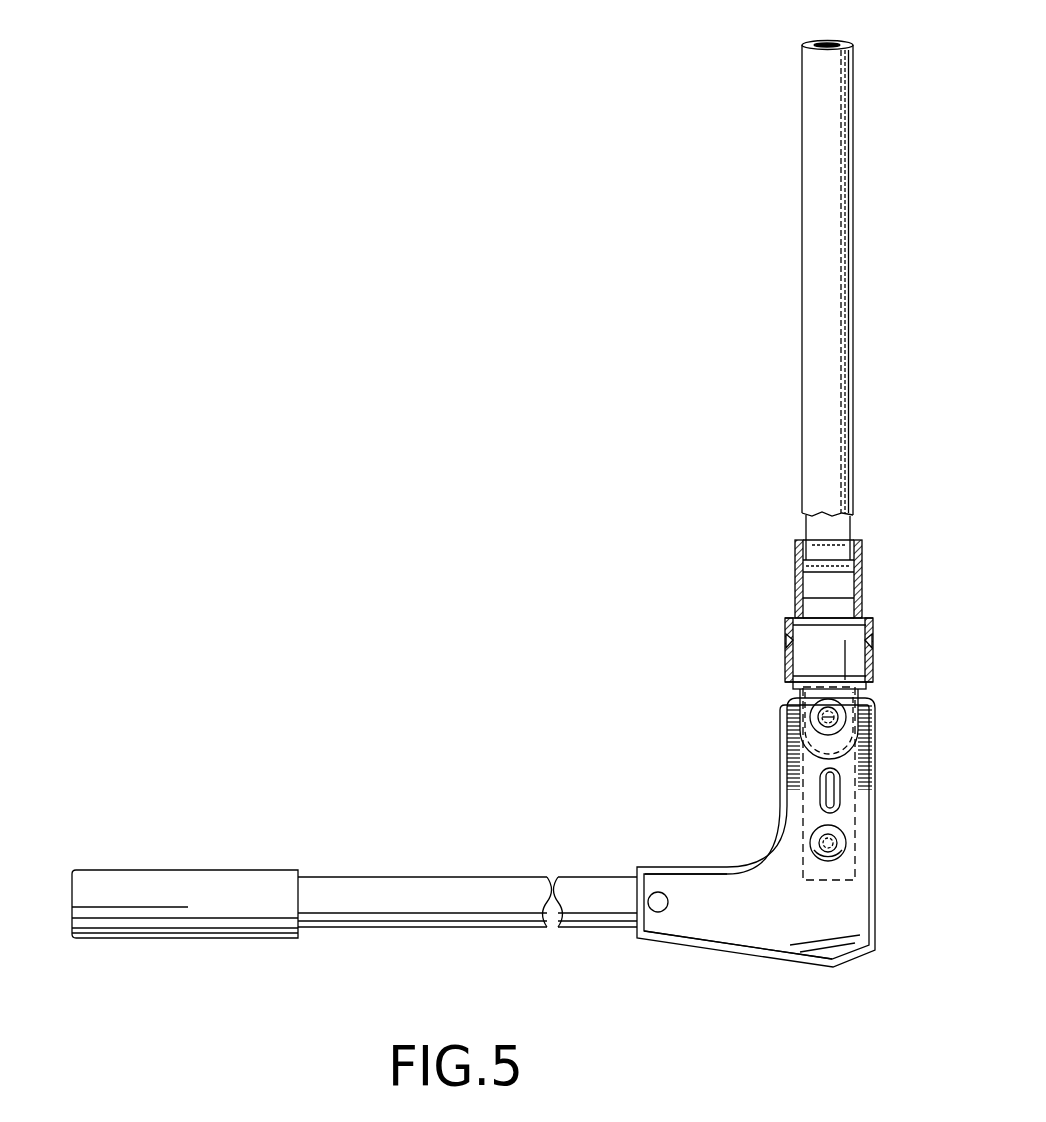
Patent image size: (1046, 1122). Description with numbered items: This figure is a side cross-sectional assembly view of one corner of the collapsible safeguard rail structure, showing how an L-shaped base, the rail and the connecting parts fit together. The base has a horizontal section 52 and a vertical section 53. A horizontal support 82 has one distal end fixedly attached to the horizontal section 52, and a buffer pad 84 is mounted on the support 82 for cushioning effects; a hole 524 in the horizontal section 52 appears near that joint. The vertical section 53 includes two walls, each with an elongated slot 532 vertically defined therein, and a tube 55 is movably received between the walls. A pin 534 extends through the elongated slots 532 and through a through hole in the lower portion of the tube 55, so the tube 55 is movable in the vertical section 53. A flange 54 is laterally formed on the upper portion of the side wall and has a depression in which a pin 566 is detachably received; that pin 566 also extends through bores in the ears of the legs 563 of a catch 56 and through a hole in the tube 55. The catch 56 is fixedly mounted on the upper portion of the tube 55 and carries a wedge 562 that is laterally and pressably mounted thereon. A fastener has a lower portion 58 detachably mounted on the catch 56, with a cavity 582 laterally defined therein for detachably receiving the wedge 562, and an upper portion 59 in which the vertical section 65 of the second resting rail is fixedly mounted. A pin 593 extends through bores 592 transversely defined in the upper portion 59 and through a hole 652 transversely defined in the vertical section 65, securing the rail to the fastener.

The vertical section 65 is at (843, 400).
The hole 652 is at (858, 562).
The upper portion 59 is at (860, 592).
The bore 592 is at (800, 566).
The pin 593 is at (820, 560).
The catch 56 is at (783, 613).
The wedge 562 is at (787, 640).
The lower portion 58 is at (787, 672).
The cavity 582 is at (870, 640).
The leg 563 is at (865, 692).
The vertical section 53 is at (790, 780).
The tube 55 is at (858, 775).
The flange 54 is at (860, 725).
The pin 566 is at (818, 716).
The elongated slot 532 is at (833, 806).
The pin 534 is at (822, 845).
The horizontal section 52 is at (735, 935).
The hole 524 is at (640, 930).
The horizontal support 82 is at (448, 886).
The buffer pad 84 is at (213, 886).